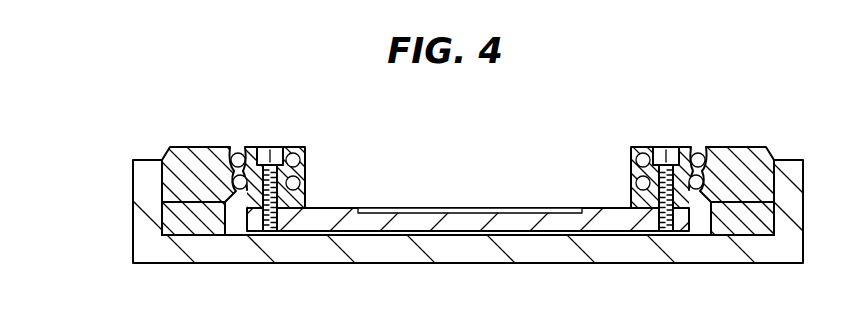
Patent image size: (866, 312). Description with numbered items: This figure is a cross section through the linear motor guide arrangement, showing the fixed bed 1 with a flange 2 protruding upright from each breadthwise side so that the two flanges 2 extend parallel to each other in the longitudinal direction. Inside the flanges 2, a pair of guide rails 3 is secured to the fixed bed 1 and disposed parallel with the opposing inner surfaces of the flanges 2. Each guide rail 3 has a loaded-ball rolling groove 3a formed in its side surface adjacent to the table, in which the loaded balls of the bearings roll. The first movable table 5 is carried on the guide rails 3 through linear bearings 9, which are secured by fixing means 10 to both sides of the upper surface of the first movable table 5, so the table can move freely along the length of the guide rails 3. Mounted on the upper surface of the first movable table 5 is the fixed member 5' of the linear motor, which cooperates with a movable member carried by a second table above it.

The fixed bed 1 is at (460, 252).
The flange 2 is at (133, 190).
The guide rail 3 is at (198, 160).
The loaded-ball rolling groove 3a is at (248, 177).
The first movable table 5 is at (466, 258).
The fixed member 5' is at (470, 175).
The linear bearing 9 is at (307, 147).
The fixing means 10 is at (267, 148).